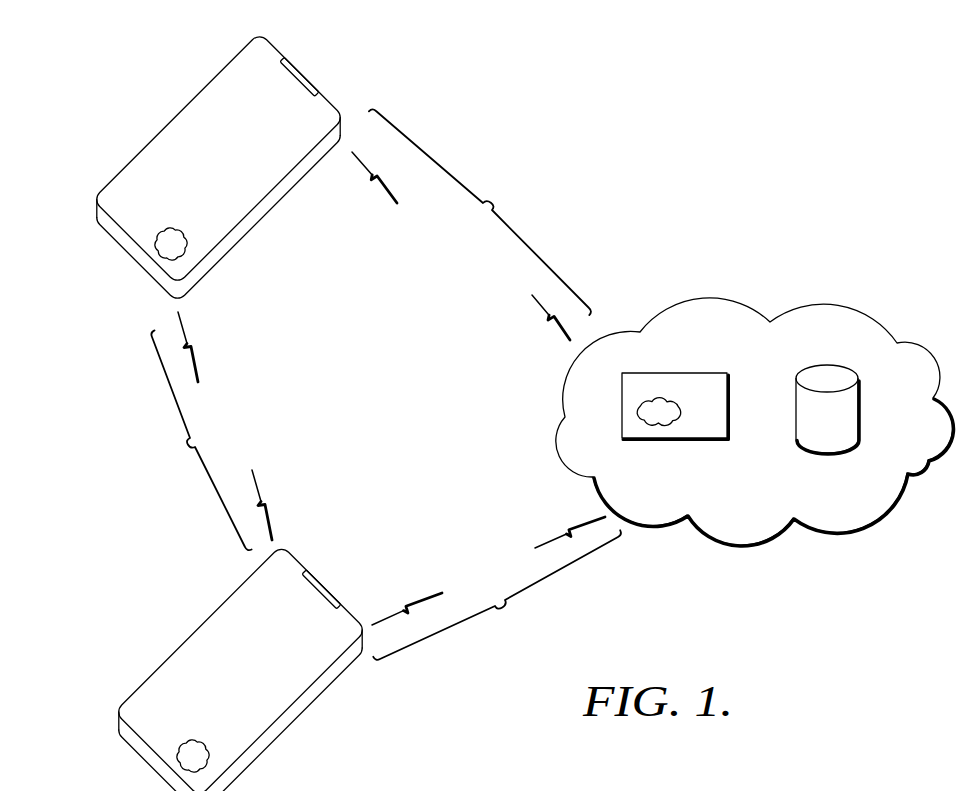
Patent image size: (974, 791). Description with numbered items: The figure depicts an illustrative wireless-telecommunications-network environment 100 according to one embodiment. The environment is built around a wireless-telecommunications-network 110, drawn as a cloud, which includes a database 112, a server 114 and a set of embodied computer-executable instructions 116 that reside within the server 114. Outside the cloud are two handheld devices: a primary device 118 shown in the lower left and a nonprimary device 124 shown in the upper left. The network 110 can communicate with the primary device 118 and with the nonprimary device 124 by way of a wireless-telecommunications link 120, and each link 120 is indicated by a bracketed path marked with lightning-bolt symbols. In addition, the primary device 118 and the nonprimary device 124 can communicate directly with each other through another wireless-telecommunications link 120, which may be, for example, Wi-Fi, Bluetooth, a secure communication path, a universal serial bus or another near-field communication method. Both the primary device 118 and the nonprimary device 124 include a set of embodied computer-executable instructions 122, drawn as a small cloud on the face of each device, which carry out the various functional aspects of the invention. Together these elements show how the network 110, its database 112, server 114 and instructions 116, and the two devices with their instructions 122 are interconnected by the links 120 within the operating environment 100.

The wireless-telecommunications-network environment 100 is at (721, 136).
The wireless-telecommunications-network 110 is at (734, 300).
The database 112 is at (828, 366).
The server 114 is at (684, 373).
The set of embodied computer-executable instructions 116 is at (629, 418).
The primary device 118 is at (201, 629).
The wireless-telecommunications link 120 is at (491, 203).
The set of embodied computer-executable instructions 122 is at (183, 236).
The nonprimary device 124 is at (190, 103).